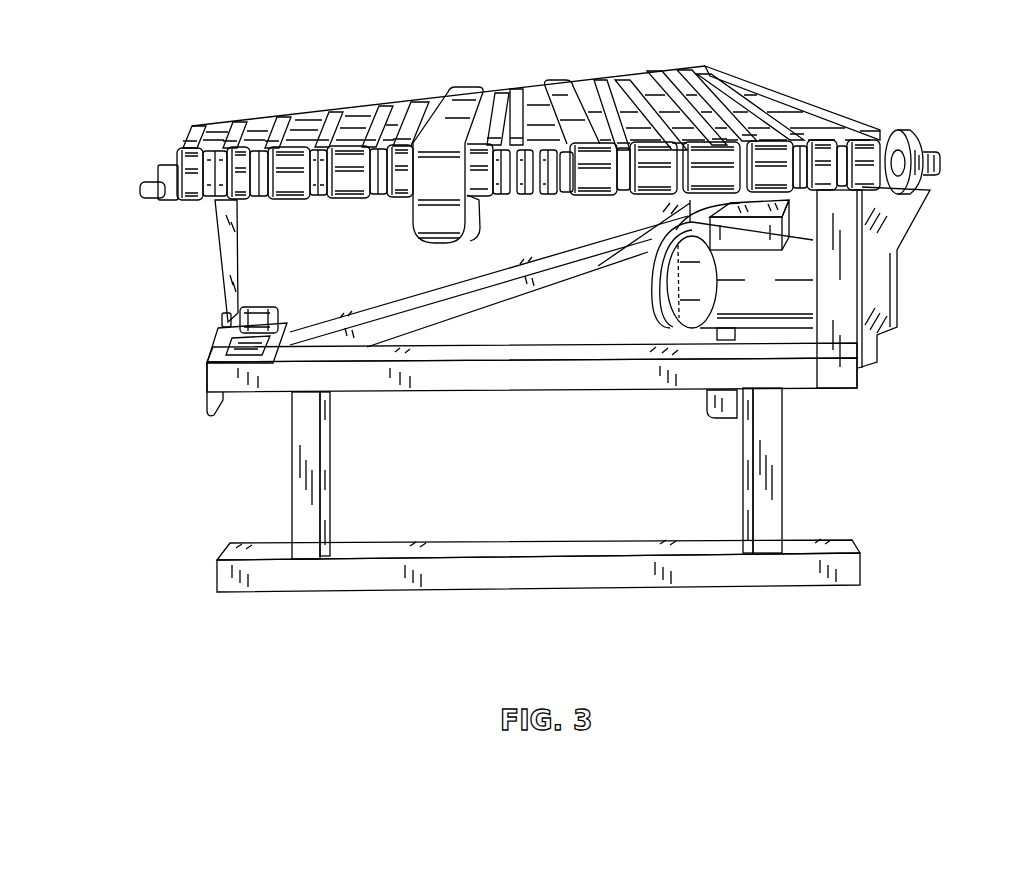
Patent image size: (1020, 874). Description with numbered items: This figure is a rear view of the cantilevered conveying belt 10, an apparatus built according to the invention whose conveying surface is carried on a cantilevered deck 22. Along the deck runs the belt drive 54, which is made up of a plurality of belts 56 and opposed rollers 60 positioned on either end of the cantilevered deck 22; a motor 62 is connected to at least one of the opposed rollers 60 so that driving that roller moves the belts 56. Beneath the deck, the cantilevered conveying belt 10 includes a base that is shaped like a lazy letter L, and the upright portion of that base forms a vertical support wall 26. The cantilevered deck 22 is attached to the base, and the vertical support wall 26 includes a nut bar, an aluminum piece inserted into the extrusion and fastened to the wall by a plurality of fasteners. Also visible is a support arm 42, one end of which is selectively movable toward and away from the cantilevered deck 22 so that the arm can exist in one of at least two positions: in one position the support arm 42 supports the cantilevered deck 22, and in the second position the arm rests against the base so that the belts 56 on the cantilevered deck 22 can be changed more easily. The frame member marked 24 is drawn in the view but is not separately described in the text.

The cantilevered conveying belt 10 is at (110, 236).
The cantilevered deck 22 is at (412, 100).
The frame 24 is at (601, 352).
The vertical support wall 26 is at (865, 350).
The support arm 42 is at (221, 252).
The belt drive 54 is at (905, 128).
The belts 56 is at (597, 82).
The opposed rollers 60 is at (292, 187).
The motor 62 is at (782, 283).